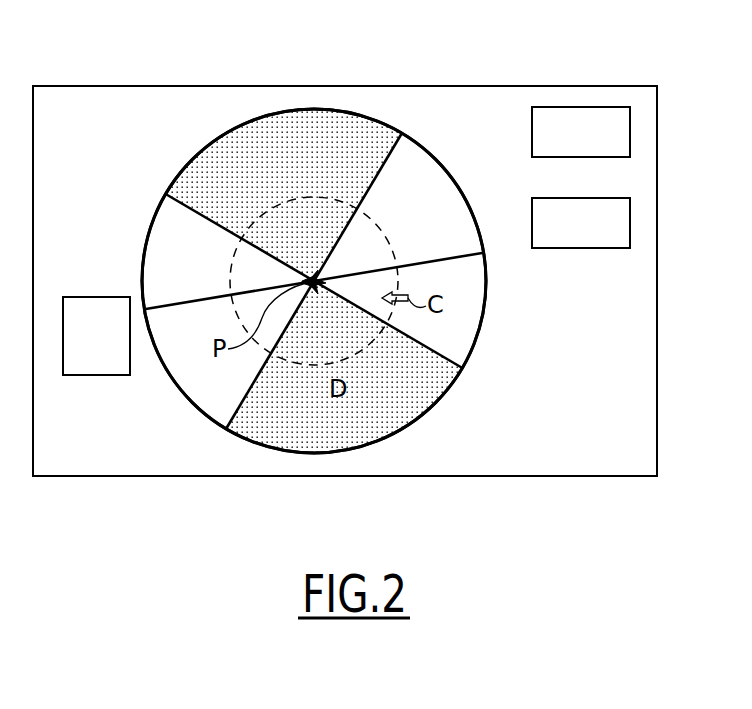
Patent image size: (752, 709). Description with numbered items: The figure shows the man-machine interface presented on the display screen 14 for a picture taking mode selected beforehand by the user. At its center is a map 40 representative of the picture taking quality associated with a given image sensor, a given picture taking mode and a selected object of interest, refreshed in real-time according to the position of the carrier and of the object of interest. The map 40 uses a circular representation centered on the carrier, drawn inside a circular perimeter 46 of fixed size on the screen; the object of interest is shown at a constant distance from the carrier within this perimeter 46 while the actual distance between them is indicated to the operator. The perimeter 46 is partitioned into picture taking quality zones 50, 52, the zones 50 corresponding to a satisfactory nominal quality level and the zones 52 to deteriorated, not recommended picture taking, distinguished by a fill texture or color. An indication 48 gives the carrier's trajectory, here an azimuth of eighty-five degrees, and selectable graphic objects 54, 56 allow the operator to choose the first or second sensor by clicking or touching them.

The display screen 14 is at (421, 86).
The map 40 is at (244, 119).
The circular perimeter 46 is at (473, 352).
The indication 48 is at (72, 297).
The picture taking quality zones 50 is at (322, 138).
The picture taking quality zones 52 is at (421, 192).
The graphic object 54 is at (583, 107).
The graphic object 56 is at (630, 220).